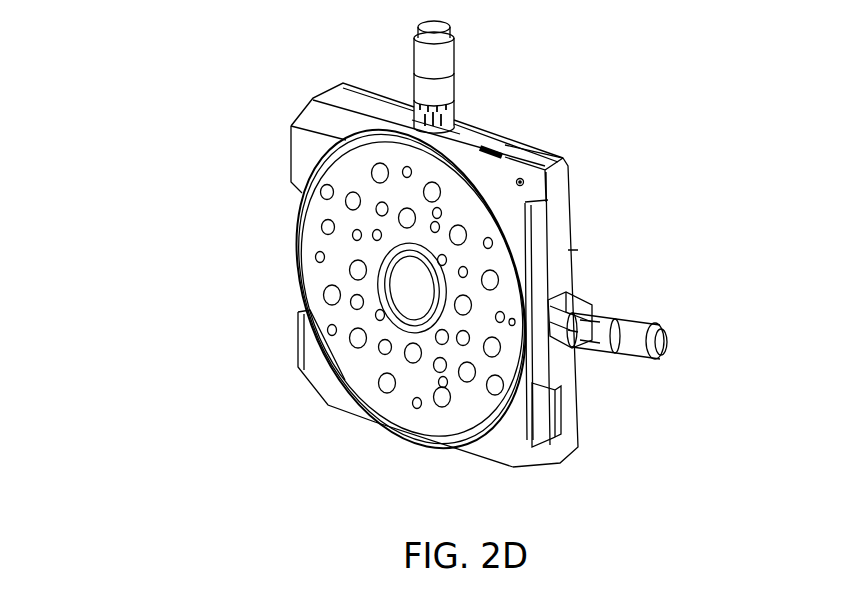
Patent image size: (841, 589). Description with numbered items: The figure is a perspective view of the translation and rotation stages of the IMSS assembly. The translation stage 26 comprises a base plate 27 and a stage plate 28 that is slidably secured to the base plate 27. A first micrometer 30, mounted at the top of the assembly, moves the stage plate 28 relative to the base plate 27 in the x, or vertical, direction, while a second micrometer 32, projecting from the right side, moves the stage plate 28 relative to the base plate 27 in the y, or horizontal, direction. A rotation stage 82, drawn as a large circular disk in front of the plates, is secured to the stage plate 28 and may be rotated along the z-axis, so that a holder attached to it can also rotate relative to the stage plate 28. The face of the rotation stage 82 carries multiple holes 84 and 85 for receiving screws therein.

The translation stage 26 is at (137, 88).
The base plate 27 is at (568, 183).
The stage plate 28 is at (298, 145).
The first micrometer 30 is at (441, 70).
The second micrometer 32 is at (660, 345).
The rotation stage 82 is at (315, 282).
The holes 84 is at (327, 226).
The hole 85 is at (333, 330).